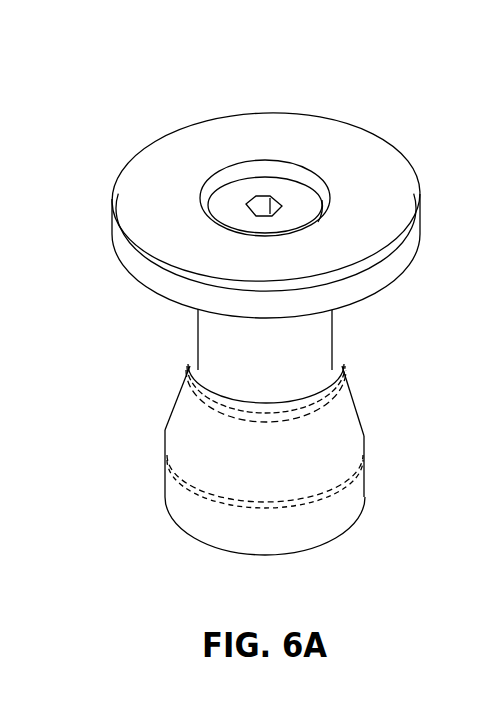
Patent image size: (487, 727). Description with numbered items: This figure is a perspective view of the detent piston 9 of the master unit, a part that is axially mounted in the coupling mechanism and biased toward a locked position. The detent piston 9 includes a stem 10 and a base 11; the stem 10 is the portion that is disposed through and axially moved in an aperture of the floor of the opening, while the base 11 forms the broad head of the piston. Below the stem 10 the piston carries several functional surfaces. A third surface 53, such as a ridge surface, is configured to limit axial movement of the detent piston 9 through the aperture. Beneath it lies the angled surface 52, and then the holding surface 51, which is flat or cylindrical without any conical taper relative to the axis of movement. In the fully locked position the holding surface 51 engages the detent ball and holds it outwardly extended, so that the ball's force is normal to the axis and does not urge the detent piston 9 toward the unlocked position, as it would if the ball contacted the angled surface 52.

The detent piston 9 is at (86, 78).
The stem 10 is at (196, 336).
The base 11 is at (362, 187).
The holding surface 51 is at (372, 490).
The angled surface 52 is at (366, 398).
The third surface 53 is at (345, 358).